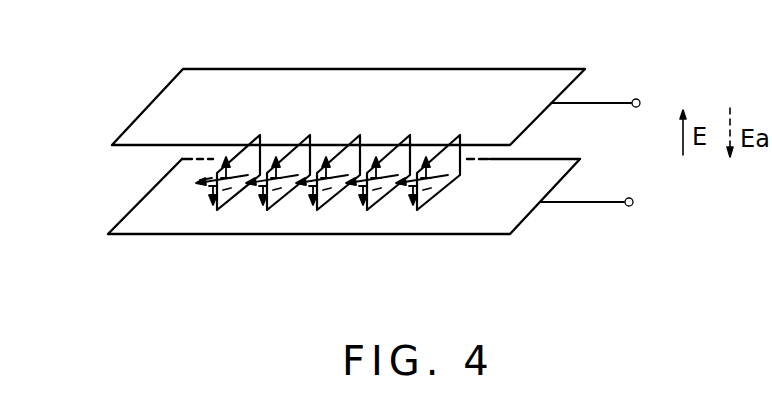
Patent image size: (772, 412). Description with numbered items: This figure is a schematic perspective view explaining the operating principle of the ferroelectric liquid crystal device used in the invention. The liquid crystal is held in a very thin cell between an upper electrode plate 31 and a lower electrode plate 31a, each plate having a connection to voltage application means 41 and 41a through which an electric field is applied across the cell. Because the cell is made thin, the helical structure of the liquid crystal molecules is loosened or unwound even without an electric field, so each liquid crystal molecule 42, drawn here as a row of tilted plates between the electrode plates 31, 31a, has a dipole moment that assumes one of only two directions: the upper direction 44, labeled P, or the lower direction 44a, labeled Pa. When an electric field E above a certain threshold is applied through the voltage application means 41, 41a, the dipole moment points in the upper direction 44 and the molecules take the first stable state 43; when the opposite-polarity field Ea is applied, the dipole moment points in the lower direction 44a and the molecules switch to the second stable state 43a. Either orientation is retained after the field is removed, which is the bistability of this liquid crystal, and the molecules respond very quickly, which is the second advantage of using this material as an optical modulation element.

The electrode plate 31 is at (560, 69).
The electrode plate 31a is at (545, 180).
The voltage application means 41 is at (641, 99).
The voltage application means 41a is at (634, 202).
The liquid crystal molecule 42 is at (460, 143).
The first stable state 43 is at (258, 144).
The second stable state 43a is at (224, 198).
The upper direction 44 is at (220, 161).
The lower direction 44a is at (212, 193).